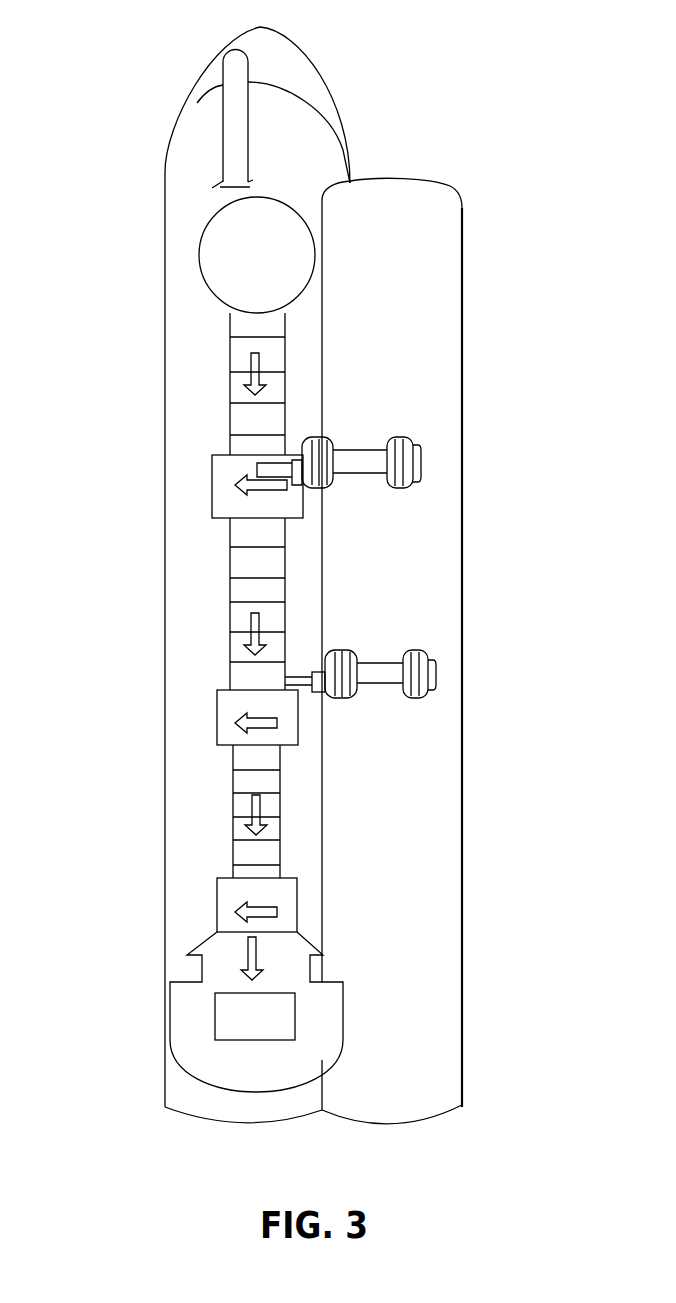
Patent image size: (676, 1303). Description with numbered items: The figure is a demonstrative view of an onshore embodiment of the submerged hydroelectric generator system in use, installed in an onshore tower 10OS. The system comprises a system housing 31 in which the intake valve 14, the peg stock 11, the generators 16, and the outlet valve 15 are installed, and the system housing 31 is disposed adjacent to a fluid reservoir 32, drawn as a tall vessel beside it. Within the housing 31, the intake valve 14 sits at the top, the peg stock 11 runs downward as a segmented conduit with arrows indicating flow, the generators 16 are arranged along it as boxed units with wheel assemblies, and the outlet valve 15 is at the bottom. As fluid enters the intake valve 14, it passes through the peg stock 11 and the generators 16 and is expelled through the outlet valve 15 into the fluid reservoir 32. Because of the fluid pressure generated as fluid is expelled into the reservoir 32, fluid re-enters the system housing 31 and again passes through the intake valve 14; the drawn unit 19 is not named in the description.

The onshore tower 10OS is at (177, 185).
The system housing 31 is at (205, 77).
The fluid reservoir 32 is at (462, 367).
The intake valve 14 is at (200, 256).
The peg stock 11 is at (232, 383).
The first pump unit with wheel assembly 19 is at (212, 483).
The generators 16 is at (217, 712).
The outlet valve 15 is at (170, 993).